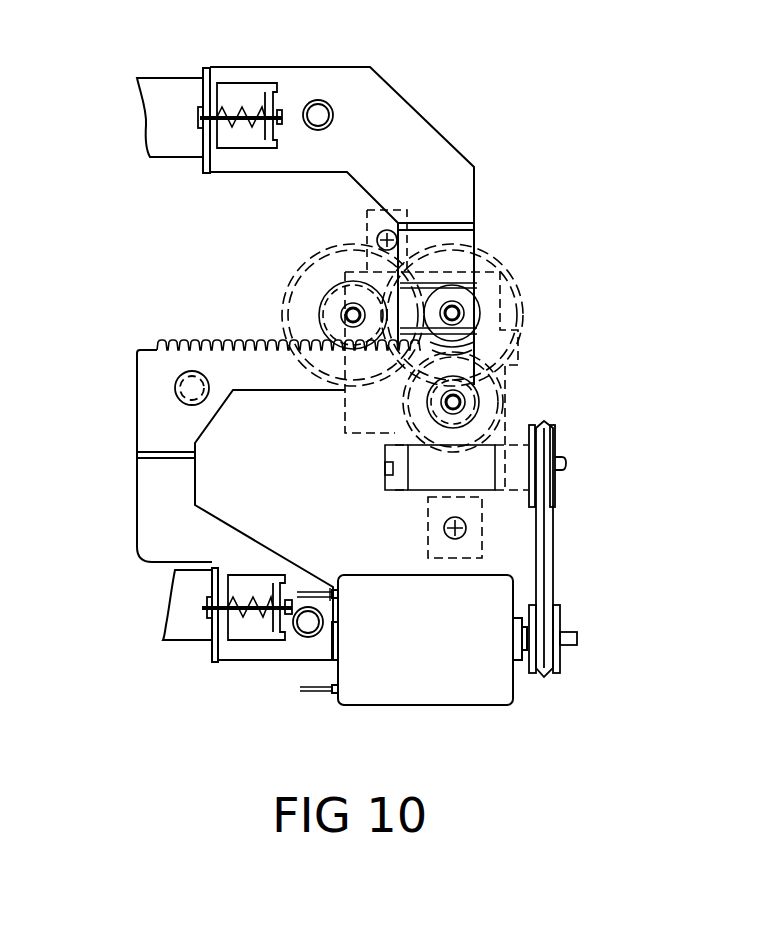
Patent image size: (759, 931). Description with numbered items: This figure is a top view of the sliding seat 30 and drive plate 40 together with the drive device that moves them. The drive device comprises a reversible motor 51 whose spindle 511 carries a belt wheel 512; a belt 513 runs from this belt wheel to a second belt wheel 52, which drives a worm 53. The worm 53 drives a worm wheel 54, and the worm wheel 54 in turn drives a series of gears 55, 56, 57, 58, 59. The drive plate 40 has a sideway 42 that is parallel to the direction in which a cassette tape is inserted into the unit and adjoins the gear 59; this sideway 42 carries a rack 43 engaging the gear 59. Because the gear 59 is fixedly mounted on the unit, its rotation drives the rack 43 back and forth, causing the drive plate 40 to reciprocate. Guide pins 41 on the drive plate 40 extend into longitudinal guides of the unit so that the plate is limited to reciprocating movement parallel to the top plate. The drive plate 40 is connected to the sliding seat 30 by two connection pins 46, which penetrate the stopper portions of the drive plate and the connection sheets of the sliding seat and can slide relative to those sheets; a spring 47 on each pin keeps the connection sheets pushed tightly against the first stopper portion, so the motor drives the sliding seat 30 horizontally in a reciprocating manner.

The sliding seat 30 is at (173, 102).
The drive plate 40 is at (437, 155).
The guide pins 41 is at (327, 98).
The sideway 42 is at (150, 348).
The rack 43 is at (223, 342).
The connection pins 46 is at (288, 108).
The spring 47 is at (237, 112).
The reversible motor 51 is at (427, 680).
The spindle 511 is at (577, 636).
The belt wheel 512 is at (560, 657).
The belt 513 is at (550, 558).
The belt wheel 52 is at (555, 485).
The worm 53 is at (418, 487).
The worm wheel 54 is at (493, 405).
The gear 55 is at (472, 398).
The gear 56 is at (512, 295).
The gear 57 is at (487, 314).
The gear 58 is at (300, 290).
The gear 59 is at (333, 302).